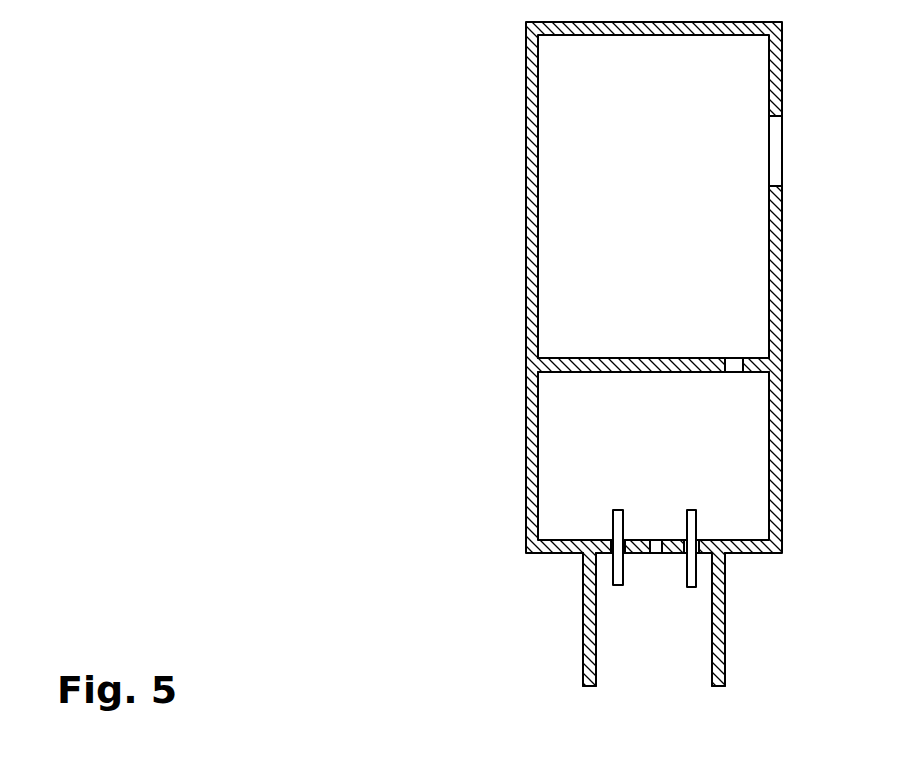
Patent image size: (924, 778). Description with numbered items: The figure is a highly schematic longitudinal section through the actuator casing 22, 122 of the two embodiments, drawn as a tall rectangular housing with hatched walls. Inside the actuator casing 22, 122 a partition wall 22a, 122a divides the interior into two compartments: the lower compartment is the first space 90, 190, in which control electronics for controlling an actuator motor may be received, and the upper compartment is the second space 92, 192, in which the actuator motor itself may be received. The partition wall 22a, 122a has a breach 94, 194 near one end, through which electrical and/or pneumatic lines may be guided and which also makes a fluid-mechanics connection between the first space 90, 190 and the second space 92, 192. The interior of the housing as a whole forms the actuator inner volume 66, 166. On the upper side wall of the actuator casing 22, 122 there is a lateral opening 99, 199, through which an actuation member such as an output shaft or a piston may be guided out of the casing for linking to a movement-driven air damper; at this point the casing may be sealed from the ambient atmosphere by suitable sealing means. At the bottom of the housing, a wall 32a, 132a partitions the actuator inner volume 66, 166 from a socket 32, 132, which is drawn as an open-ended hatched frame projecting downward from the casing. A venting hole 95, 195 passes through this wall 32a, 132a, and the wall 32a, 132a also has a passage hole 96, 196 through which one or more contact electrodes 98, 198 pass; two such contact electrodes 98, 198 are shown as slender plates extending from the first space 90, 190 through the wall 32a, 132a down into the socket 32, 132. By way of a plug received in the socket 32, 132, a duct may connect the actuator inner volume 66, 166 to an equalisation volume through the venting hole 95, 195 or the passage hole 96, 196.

The actuator casing 22 is at (583, 354).
The actuator casing 122 is at (527, 90).
The second space 92 is at (480, 185).
The second space 192 is at (563, 177).
The lateral opening 99 is at (829, 151).
The lateral opening 199 is at (778, 159).
The actuator inner volume 66 is at (653, 196).
The actuator inner volume 166 is at (680, 252).
The partition wall 22a is at (653, 340).
The partition wall 122a is at (578, 359).
The breach 94 is at (724, 340).
The breach 194 is at (733, 364).
The first space 90 is at (653, 456).
The first space 190 is at (677, 462).
The wall 32a is at (653, 513).
The wall 132a is at (638, 541).
The venting hole 95 is at (658, 575).
The venting hole 195 is at (657, 555).
The passage hole 96 is at (724, 523).
The passage hole 196 is at (700, 536).
The contact electrode 98 is at (702, 593).
The contact electrode 198 is at (693, 571).
The socket 32 is at (705, 619).
The socket 132 is at (692, 645).